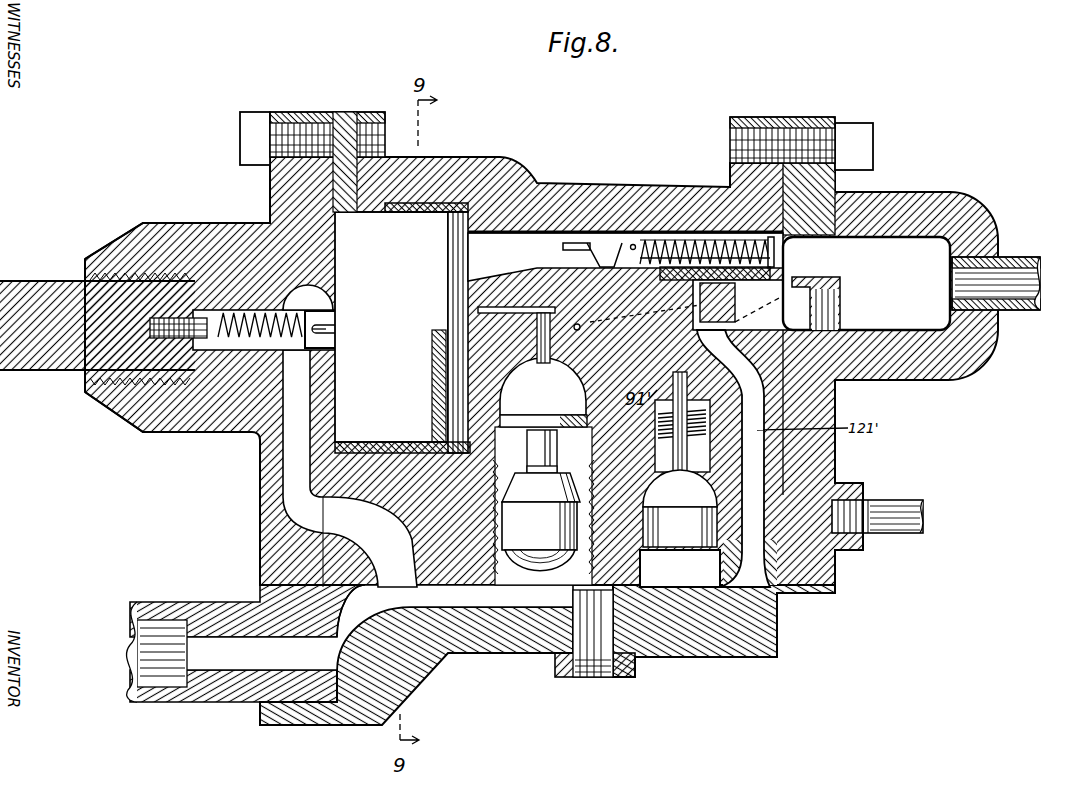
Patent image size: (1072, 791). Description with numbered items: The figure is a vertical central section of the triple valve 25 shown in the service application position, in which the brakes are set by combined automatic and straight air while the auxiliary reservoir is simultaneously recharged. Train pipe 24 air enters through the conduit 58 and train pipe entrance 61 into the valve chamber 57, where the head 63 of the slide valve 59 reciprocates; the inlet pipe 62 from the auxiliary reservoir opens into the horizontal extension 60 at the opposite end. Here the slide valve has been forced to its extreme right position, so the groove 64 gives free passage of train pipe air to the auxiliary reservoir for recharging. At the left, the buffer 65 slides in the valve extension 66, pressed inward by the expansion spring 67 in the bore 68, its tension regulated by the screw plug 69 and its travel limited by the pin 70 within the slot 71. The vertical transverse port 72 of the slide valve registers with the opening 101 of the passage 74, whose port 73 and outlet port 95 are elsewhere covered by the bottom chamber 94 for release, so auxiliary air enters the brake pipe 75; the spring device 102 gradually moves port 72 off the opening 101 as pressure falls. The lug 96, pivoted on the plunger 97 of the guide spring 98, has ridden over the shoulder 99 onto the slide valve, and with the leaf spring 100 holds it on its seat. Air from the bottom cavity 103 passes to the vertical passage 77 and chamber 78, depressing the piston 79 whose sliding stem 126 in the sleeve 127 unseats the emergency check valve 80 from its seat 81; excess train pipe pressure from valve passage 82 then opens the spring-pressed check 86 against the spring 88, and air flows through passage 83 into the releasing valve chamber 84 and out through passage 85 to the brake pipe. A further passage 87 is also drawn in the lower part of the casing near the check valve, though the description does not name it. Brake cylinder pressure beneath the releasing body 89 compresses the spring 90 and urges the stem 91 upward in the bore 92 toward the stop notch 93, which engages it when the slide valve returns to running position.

The train pipe 24 is at (147, 668).
The triple valve 25 is at (707, 443).
The valve chamber 57 is at (517, 400).
The conduit 58 is at (337, 658).
The slide valve 59 is at (533, 280).
The horizontal extension 60 is at (790, 280).
The train pipe entrance 61 is at (332, 285).
The inlet pipe 62 is at (1010, 263).
The head 63 is at (448, 250).
The groove 64 is at (422, 207).
The buffer 65 is at (345, 326).
The valve extension 66 is at (165, 237).
The expansion spring 67 is at (244, 312).
The bore 68 is at (207, 312).
The screw plug 69 is at (167, 357).
The pin 70 is at (366, 312).
The slot 71 is at (365, 332).
The vertical transverse port 72 is at (716, 303).
The port 73 is at (567, 380).
The passage 74 is at (755, 420).
The brake pipe 75 is at (925, 458).
The vertical passage 77 is at (573, 340).
The chamber 78 is at (440, 425).
The piston 79 is at (543, 411).
The emergency check valve 80 is at (541, 511).
The seat 81 is at (477, 475).
The valve passage 82 is at (520, 587).
The passage 83 is at (637, 590).
The releasing valve chamber 84 is at (680, 568).
The passage 85 is at (805, 574).
The spring-pressed check 86 is at (540, 590).
The passage 87 is at (469, 597).
The spring 88 is at (560, 553).
The releasing body 89 is at (680, 508).
The spring 90 is at (705, 455).
The stem 91 is at (826, 388).
The bore 92 is at (762, 386).
The stop notch 93 is at (780, 288).
The bottom chamber 94 is at (703, 303).
The outlet port 95 is at (555, 360).
The lug 96 is at (612, 252).
The plunger 97 is at (575, 243).
The guide spring 98 is at (694, 266).
The shoulder 99 is at (742, 215).
The leaf spring 100 is at (598, 246).
The opening 101 is at (673, 266).
The spring device 102 is at (827, 283).
The bottom cavity 103 is at (521, 294).
The sliding stem 126 is at (558, 451).
The sleeve 127 is at (533, 453).